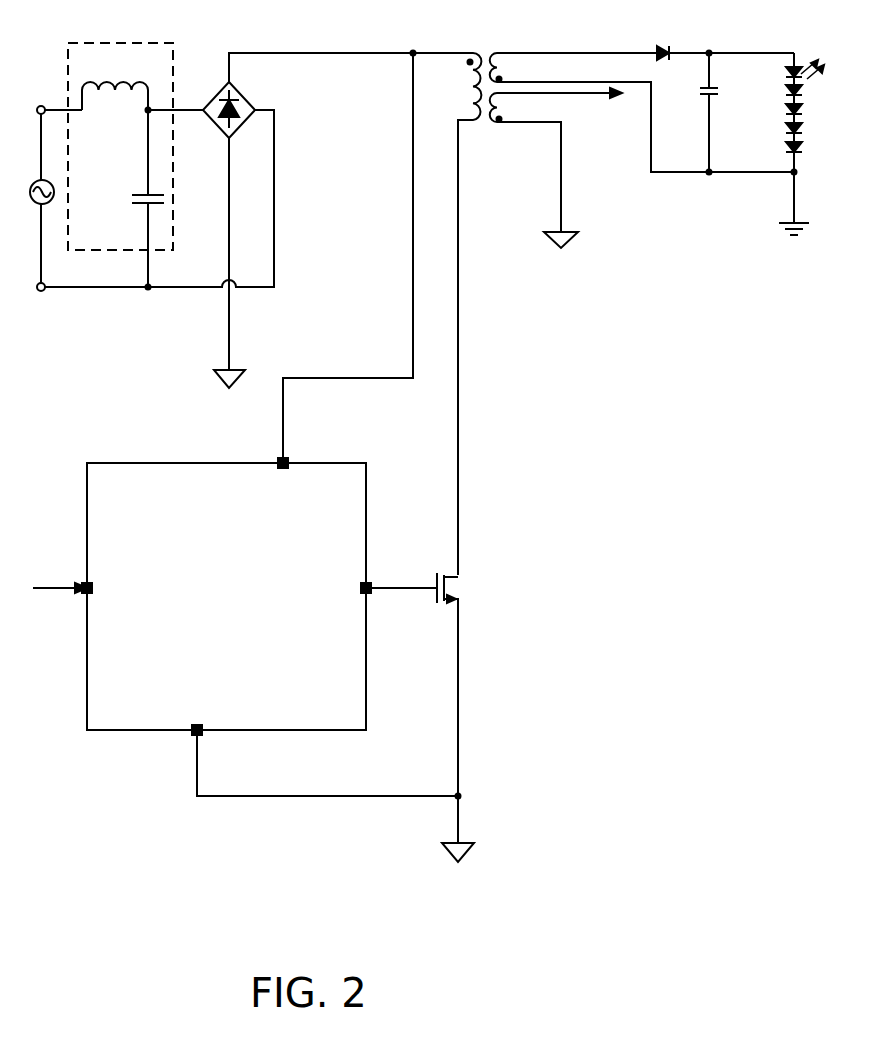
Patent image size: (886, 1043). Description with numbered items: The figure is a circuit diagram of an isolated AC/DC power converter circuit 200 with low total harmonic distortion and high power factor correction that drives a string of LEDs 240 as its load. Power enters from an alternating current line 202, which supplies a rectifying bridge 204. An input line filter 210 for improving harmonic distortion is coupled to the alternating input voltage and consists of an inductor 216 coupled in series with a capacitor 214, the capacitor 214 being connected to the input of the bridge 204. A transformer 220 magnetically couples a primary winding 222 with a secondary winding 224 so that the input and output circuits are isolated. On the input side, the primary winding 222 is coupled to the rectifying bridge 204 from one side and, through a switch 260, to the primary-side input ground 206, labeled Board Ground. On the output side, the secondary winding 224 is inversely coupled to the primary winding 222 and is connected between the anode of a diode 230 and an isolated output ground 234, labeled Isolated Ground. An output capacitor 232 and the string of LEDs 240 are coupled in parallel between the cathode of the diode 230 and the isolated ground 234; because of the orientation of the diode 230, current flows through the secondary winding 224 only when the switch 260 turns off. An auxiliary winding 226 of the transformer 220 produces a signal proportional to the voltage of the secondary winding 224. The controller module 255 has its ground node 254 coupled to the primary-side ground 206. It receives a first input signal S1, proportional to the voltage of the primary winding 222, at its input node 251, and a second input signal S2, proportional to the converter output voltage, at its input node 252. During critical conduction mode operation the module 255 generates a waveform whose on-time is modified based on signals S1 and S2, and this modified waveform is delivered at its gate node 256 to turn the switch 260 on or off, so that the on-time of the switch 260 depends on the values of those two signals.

The isolated AC/DC power converter circuit 200 is at (566, 862).
The alternating current line 202 is at (35, 176).
The rectifying bridge 204 is at (290, 105).
The input ground 206 is at (272, 363).
The input line filter 210 is at (128, 38).
The capacitor 214 is at (130, 231).
The inductor 216 is at (133, 120).
The transformer 220 is at (570, 46).
The primary winding 222 is at (465, 95).
The secondary winding 224 is at (542, 75).
The auxiliary winding 226 is at (542, 119).
The diode 230 is at (720, 43).
The output capacitor 232 is at (755, 116).
The isolated output ground 234 is at (838, 218).
The string of LEDs 240 is at (842, 108).
The input node 251 is at (240, 492).
The input node 252 is at (137, 596).
The node 254 is at (155, 755).
The module 255 is at (250, 611).
The node 256 is at (310, 595).
The switch 260 is at (510, 600).